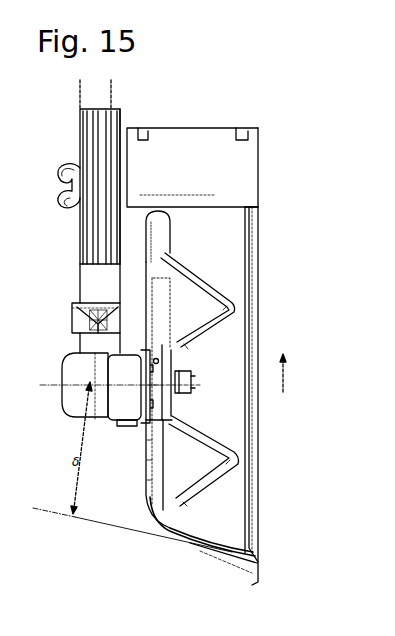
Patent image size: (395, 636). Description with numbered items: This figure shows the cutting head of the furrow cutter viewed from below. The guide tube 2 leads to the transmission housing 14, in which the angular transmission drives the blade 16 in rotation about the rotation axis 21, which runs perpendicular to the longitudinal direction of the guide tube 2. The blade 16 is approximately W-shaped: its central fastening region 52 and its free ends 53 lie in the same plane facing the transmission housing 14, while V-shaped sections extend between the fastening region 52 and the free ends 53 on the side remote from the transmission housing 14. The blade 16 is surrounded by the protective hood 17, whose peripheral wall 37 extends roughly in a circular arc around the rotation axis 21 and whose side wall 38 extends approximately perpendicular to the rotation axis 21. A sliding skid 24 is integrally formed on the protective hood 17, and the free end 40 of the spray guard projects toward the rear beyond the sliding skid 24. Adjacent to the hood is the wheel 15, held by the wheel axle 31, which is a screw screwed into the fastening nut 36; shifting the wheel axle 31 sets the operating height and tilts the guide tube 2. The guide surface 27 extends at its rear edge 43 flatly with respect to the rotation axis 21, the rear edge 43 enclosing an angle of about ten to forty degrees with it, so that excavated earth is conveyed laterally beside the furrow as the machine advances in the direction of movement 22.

The guide tube 2 is at (88, 90).
The wheel 15 is at (92, 138).
The wheel axle 31 is at (122, 262).
The fastening nut 36 is at (62, 200).
The sliding skid 24 is at (206, 170).
The free end of the spray guard 40 is at (248, 205).
The peripheral wall 37 is at (237, 344).
The protective hood 17 is at (259, 465).
The direction of movement 22 is at (293, 373).
The blade 16 is at (207, 280).
The free ends of the blade 53 is at (167, 255).
The central fastening region 52 is at (177, 406).
The side wall 38 is at (150, 453).
The transmission housing 14 is at (88, 370).
The rotation axis 21 is at (62, 385).
The rear edge 43 is at (197, 542).
The guide surface 27 is at (230, 555).